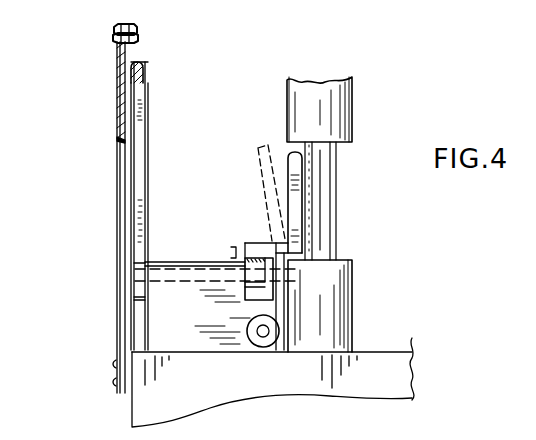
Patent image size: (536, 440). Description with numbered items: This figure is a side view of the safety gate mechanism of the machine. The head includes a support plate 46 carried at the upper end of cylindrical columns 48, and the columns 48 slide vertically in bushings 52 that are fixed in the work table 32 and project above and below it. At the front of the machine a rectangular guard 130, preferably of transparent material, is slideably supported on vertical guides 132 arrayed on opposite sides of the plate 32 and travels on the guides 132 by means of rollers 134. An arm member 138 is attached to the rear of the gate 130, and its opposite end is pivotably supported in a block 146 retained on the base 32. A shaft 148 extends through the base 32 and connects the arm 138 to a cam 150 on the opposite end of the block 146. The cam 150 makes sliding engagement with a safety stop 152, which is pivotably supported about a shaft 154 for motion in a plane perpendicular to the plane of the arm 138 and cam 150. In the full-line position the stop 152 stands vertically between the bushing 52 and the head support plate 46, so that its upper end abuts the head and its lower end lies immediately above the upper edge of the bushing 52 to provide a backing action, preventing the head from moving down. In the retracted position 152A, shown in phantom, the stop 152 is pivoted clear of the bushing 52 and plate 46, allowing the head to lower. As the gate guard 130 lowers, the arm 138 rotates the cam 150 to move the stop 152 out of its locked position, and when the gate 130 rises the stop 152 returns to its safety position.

The work table 32 is at (419, 337).
The support plate 46 is at (338, 98).
The cylindrical columns 48 is at (332, 168).
The bushing 52 is at (343, 303).
The guard 130 is at (139, 50).
The vertical guides 132 is at (136, 24).
The rollers 134 is at (118, 40).
The arm member 138 is at (147, 196).
The block 146 is at (199, 261).
The shaft 148 is at (182, 281).
The cam 150 is at (266, 273).
The safety stop 152 is at (298, 205).
The retracted position of the safety stop 152A is at (280, 145).
The shaft 154 is at (264, 334).